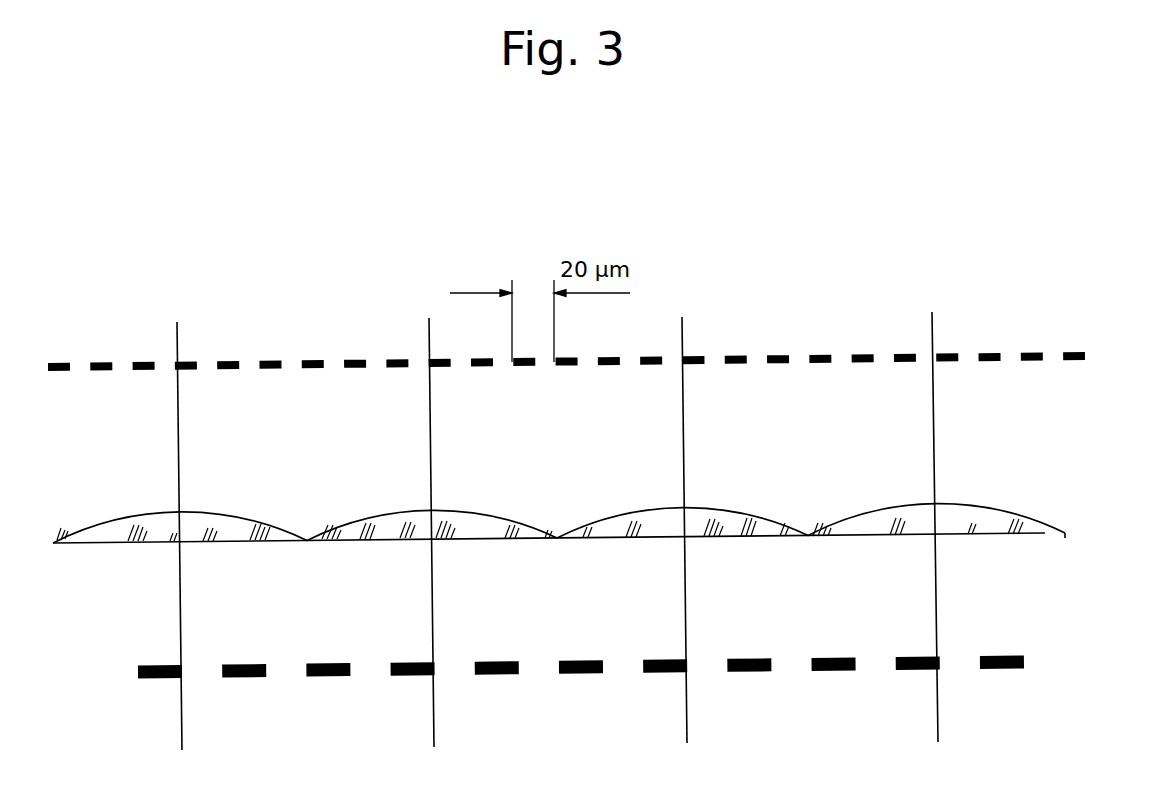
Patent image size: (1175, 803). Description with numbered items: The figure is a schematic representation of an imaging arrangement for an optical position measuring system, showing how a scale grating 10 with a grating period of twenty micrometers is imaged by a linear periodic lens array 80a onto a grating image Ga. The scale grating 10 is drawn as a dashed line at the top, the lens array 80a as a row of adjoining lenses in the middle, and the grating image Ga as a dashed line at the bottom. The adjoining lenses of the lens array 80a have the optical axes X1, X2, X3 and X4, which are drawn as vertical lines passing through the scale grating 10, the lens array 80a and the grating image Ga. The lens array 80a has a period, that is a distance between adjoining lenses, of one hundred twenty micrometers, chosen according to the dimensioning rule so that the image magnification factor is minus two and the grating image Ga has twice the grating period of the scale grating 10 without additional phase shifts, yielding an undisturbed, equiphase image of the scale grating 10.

The scale grating 10 is at (1037, 350).
The lens array 80a is at (1038, 518).
The grating image Ga is at (1025, 655).
The optical axis X1 is at (183, 517).
The optical axis X2 is at (436, 512).
The optical axis X3 is at (685, 509).
The optical axis X4 is at (939, 508).